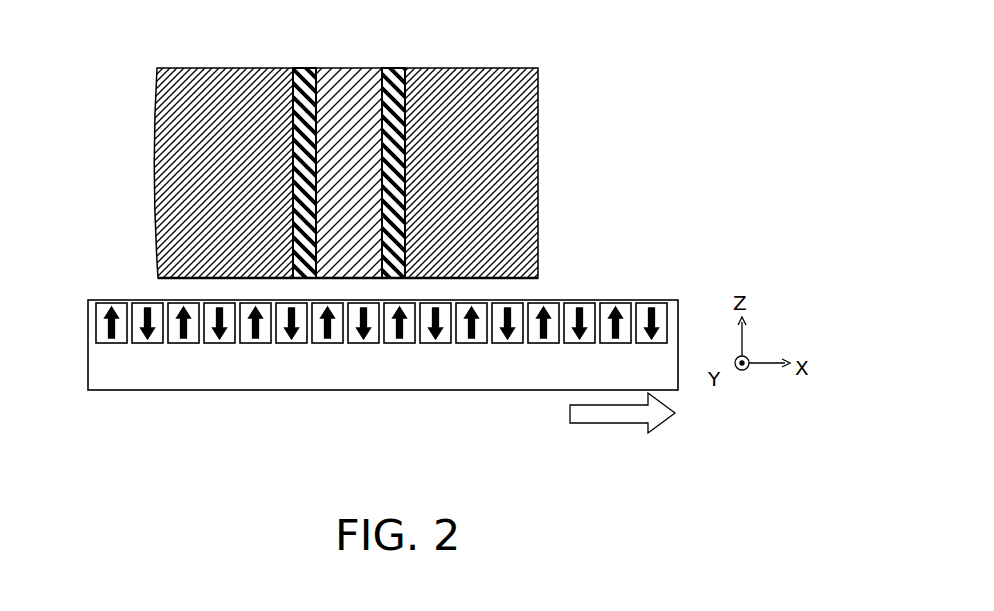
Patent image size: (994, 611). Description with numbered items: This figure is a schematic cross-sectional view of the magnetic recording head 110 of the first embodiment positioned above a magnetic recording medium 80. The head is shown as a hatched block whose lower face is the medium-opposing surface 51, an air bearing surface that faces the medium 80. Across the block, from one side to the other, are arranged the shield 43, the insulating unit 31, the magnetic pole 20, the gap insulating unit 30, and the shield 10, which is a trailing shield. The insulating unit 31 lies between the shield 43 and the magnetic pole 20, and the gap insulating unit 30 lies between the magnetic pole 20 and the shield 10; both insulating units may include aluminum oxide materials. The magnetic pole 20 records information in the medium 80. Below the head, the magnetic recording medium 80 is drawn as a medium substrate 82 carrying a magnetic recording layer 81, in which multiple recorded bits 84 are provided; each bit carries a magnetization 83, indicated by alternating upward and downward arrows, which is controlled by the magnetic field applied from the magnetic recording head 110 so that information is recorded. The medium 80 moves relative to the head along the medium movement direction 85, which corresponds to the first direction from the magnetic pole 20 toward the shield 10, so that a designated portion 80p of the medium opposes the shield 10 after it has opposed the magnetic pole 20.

The magnetic recording head 110 is at (571, 102).
The shield 43 is at (213, 83).
The insulating unit 31 is at (298, 67).
The magnetic pole 20 is at (343, 92).
The gap insulating unit 30 is at (395, 67).
The shield 10 is at (478, 83).
The medium-opposing surface 51 is at (473, 255).
The magnetic recording medium 80 is at (190, 432).
The magnetic recording layer 81 is at (122, 333).
The medium substrate 82 is at (177, 362).
The magnetization 83 is at (268, 345).
The recorded bits 84 is at (300, 343).
The designated portion 80p is at (367, 345).
The medium movement direction 85 is at (613, 423).